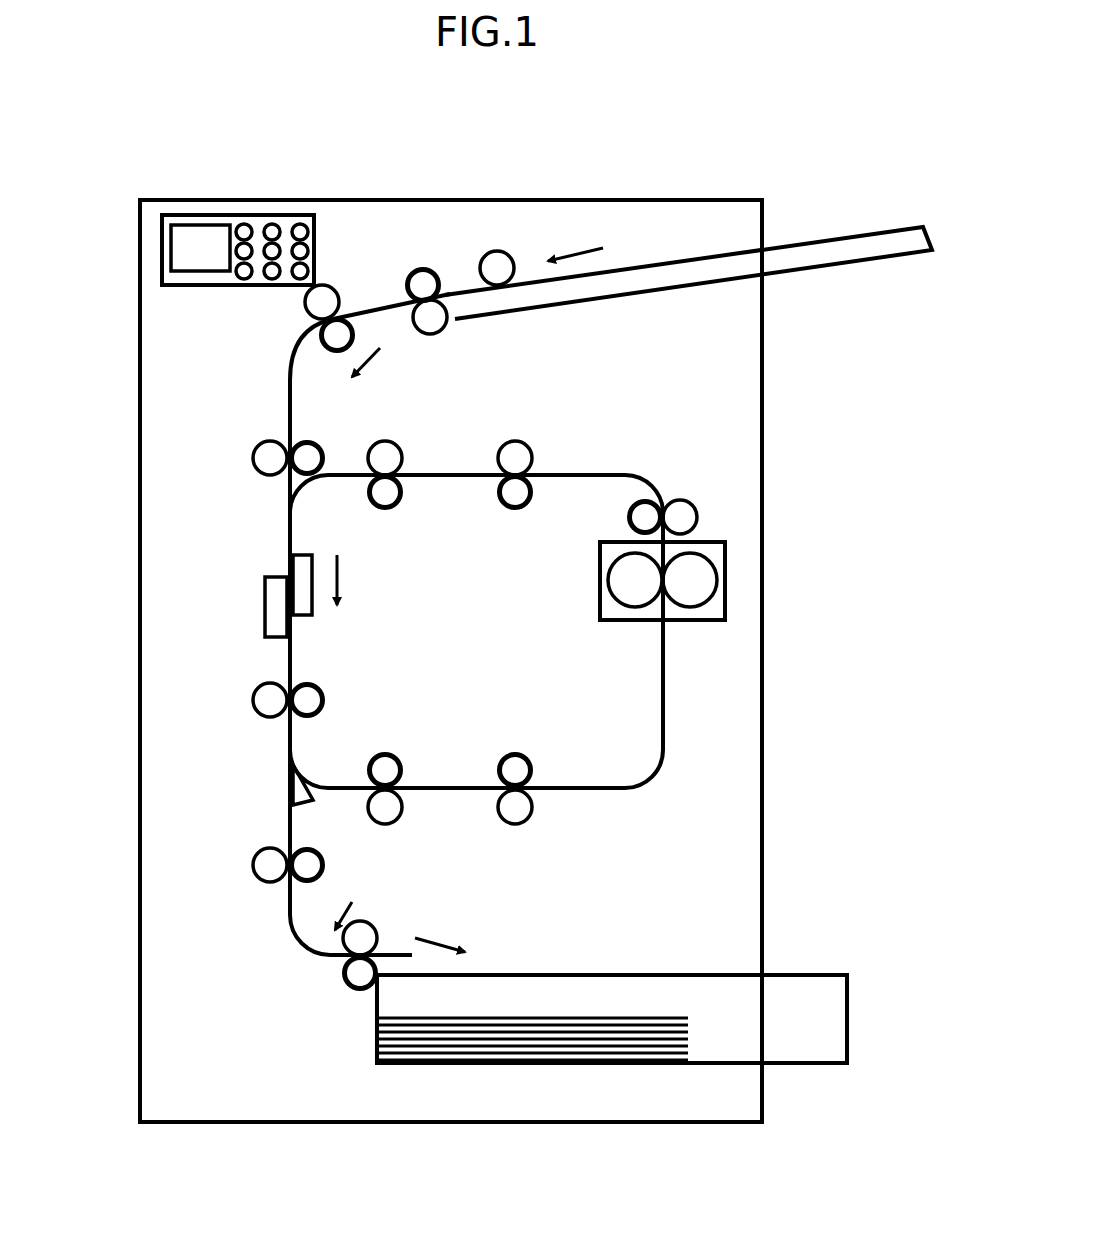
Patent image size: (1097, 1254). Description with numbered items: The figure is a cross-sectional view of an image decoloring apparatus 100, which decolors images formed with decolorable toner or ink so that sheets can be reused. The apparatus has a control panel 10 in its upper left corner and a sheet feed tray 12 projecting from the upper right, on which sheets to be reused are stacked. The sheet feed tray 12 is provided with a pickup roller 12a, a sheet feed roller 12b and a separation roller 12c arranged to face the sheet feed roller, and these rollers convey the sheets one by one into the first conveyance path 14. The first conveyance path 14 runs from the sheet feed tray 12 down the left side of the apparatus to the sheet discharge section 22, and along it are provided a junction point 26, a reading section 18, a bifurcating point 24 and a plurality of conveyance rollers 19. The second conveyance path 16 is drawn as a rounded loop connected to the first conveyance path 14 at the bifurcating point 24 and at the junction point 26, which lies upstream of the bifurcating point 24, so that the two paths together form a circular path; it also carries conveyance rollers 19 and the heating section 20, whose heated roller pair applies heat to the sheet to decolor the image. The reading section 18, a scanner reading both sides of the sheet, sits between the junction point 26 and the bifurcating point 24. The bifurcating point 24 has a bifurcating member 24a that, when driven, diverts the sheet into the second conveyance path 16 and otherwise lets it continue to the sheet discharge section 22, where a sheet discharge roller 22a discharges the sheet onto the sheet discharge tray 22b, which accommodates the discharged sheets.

The image decoloring apparatus 100 is at (306, 182).
The control panel 10 is at (163, 249).
The sheet feed tray 12 is at (855, 225).
The pickup roller 12a is at (502, 251).
The sheet feed roller 12b is at (427, 266).
The separation roller 12c is at (448, 330).
The first conveyance path 14 is at (298, 332).
The second conveyance path 16 is at (668, 755).
The reading section 18 is at (236, 601).
The conveyance rollers 19 is at (318, 456).
The heating section 20 is at (745, 584).
The sheet discharge section 22 is at (712, 990).
The sheet discharge roller 22a is at (344, 983).
The sheet discharge tray 22b is at (849, 1016).
The bifurcating point 24 is at (291, 745).
The bifurcating member 24a is at (292, 787).
The junction point 26 is at (285, 497).